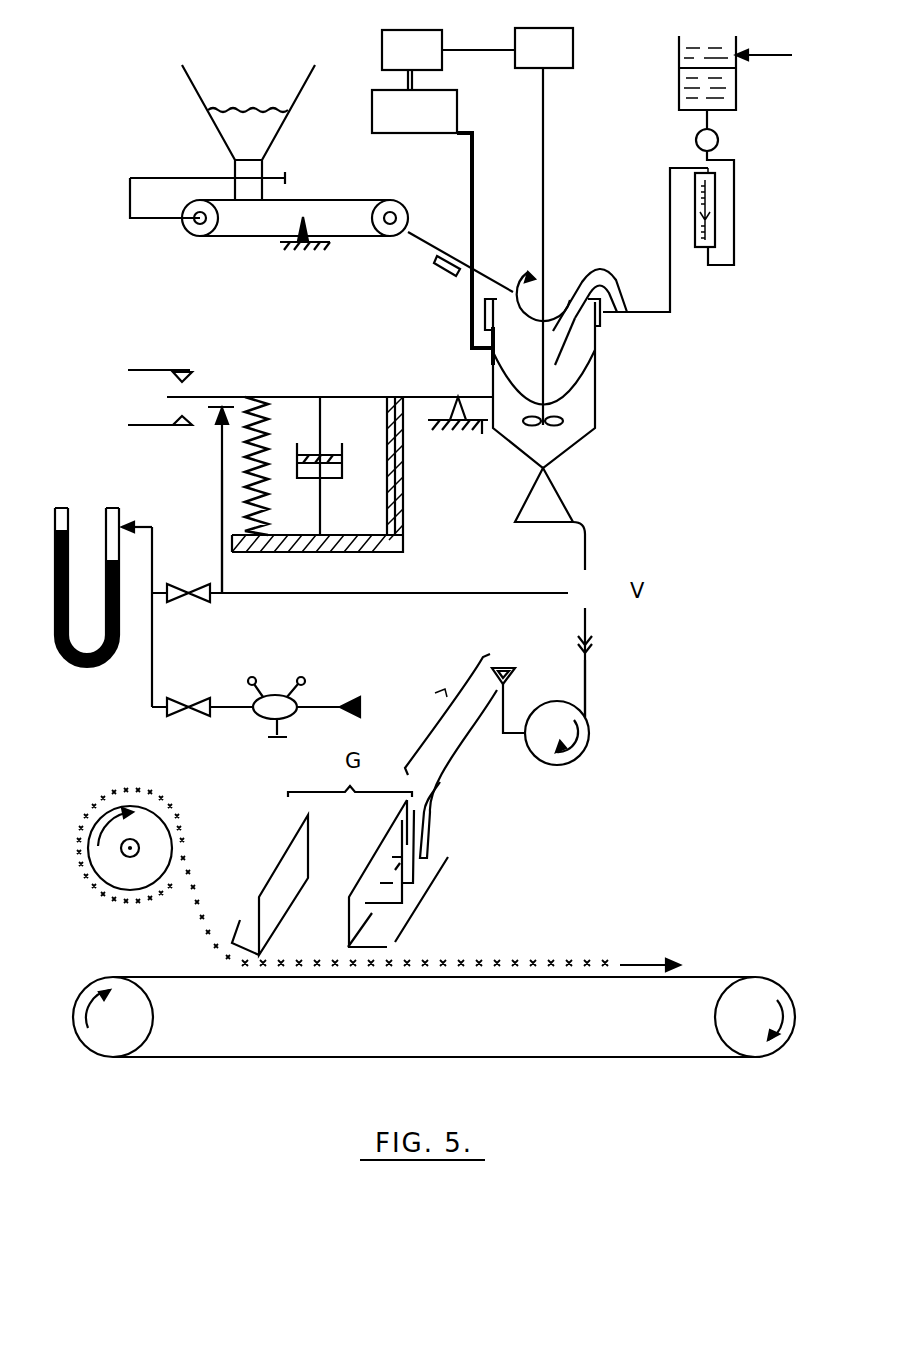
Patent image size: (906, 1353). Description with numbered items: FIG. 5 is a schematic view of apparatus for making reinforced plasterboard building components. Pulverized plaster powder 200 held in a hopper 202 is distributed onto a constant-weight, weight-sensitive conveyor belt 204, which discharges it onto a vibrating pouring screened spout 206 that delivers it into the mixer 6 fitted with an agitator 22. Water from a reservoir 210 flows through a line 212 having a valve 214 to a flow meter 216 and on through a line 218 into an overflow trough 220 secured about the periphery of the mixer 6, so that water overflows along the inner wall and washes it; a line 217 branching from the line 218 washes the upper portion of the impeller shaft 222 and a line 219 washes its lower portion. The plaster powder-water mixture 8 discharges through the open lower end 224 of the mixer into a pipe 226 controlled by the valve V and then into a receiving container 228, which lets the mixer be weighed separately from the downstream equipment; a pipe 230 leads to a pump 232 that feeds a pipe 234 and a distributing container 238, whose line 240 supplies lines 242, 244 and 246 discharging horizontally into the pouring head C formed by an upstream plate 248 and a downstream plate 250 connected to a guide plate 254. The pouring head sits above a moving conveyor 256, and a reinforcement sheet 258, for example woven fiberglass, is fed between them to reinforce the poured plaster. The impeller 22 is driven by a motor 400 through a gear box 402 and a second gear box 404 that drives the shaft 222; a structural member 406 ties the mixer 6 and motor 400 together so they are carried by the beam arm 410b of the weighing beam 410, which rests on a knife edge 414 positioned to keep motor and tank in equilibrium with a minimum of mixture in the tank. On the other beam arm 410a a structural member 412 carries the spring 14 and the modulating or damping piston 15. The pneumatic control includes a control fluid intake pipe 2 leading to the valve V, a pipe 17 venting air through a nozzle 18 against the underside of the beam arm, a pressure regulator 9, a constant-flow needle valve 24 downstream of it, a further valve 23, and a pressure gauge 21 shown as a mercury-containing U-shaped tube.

The control fluid intake pipe 2 is at (448, 592).
The mixer 6 is at (493, 376).
The plaster powder-water mixture 8 is at (578, 395).
The pressure regulator 9 is at (287, 717).
The spring 14 is at (267, 428).
The damping piston 15 is at (328, 467).
The pipe 17 is at (220, 503).
The nozzle 18 is at (215, 418).
The pressure gauge 21 is at (90, 668).
The agitator 22 is at (573, 420).
The valve 23 is at (198, 602).
The constant flow needle valve 24 is at (200, 718).
The pulverized plaster powder 200 is at (245, 108).
The hopper 202 is at (302, 88).
The conveyor belt 204 is at (318, 200).
The vibrating pouring screened spout 206 is at (430, 242).
The water reservoir 210 is at (736, 90).
The line 212 is at (703, 119).
The valve 214 is at (720, 140).
The flow meter 216 is at (718, 197).
The line 217 is at (578, 286).
The line 218 is at (667, 290).
The line 219 is at (557, 343).
The overflow trough 220 is at (485, 315).
The impeller shaft 222 is at (545, 258).
The open lower end 224 is at (577, 518).
The pipe 226 is at (587, 545).
The receiving container 228 is at (592, 646).
The pipe 230 is at (587, 682).
The pump 232 is at (590, 745).
The pipe 234 is at (507, 697).
The distributing container 238 is at (503, 664).
The line 240 is at (450, 750).
The line 242 is at (433, 827).
The line 244 is at (415, 865).
The line 246 is at (405, 925).
The upstream plate 248 is at (273, 873).
The downstream plate 250 is at (363, 872).
The guide plate 254 is at (417, 895).
The moving conveyor 256 is at (265, 1075).
The reinforcement sheet 258 is at (200, 920).
The motor 400 is at (425, 115).
The gear box 402 is at (408, 42).
The gear box 404 is at (548, 45).
The structural member 406 is at (474, 206).
The chamber 410 is at (355, 395).
The beam arm 410a is at (223, 397).
The beam arm 410b is at (482, 434).
The structural member 412 is at (393, 510).
The knife edge 414 is at (456, 395).